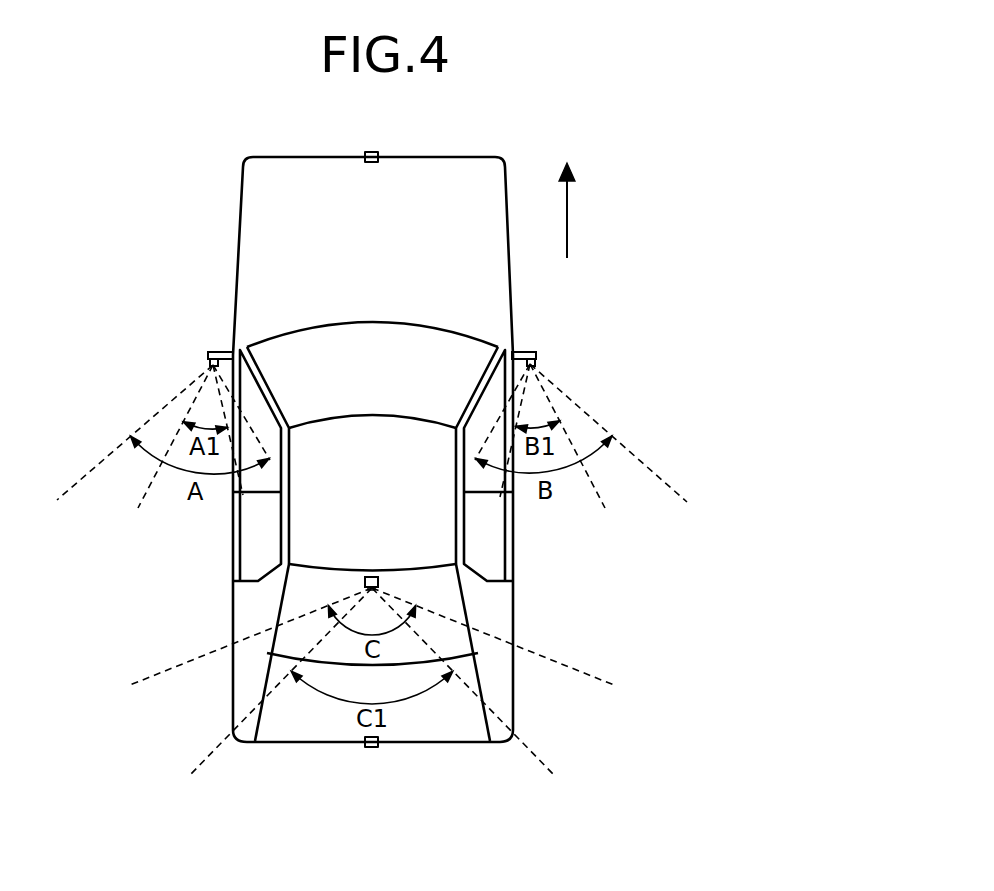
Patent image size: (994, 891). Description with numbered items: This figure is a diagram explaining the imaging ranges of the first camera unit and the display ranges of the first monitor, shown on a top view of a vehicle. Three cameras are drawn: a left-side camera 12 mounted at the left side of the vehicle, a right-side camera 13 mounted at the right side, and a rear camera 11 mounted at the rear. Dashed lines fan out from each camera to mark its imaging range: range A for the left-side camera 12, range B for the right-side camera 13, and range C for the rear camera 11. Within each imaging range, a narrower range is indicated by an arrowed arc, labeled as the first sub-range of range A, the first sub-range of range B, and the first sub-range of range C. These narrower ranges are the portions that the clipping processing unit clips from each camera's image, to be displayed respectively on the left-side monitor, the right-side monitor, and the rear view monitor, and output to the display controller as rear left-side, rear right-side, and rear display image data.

The rear camera 11 is at (378, 582).
The left-side camera 12 is at (208, 360).
The right-side camera 13 is at (537, 361).